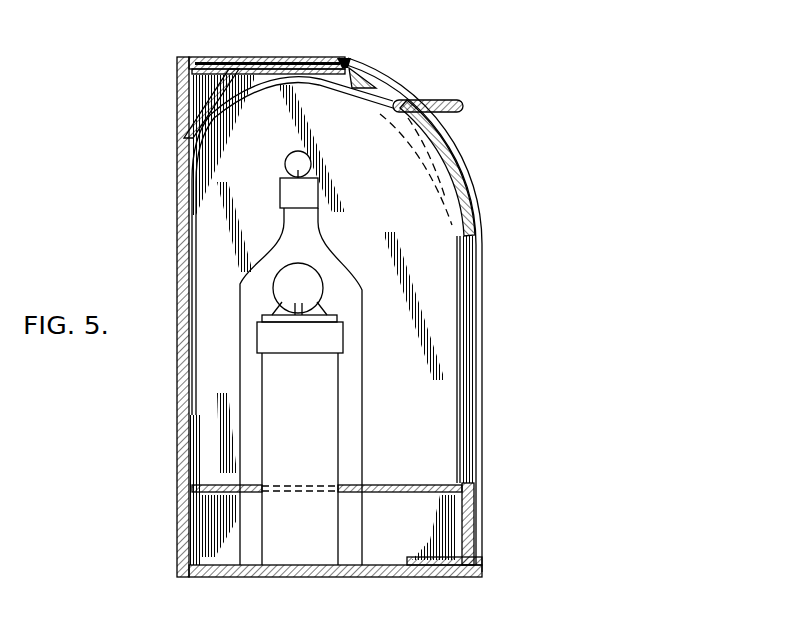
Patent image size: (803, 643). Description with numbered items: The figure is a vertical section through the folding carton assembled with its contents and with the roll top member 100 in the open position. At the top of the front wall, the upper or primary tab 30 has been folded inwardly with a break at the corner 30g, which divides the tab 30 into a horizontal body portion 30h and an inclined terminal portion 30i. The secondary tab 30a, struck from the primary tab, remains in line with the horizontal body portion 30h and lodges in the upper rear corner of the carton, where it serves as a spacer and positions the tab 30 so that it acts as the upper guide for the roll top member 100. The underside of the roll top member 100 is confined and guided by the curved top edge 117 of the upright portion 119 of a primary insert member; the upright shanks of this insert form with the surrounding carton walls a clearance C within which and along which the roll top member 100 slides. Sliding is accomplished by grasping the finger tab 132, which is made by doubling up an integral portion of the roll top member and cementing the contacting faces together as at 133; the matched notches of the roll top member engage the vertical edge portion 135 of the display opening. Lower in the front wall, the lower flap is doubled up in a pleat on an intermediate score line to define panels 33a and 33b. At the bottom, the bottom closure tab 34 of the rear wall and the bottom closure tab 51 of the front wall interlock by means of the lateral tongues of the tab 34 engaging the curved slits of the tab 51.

The upper flap or primary tab 30 is at (272, 62).
The corner 30g is at (227, 70).
The horizontal body portion 30h is at (299, 72).
The secondary tab 30a is at (214, 77).
The inclined terminal portion 30i is at (195, 119).
The roll top member 100 is at (207, 150).
The cemented faces 133 is at (412, 112).
The finger tab 132 is at (462, 104).
The curved top edge 117 is at (427, 157).
The vertical edge portion 135 is at (465, 193).
The upright portion 119 is at (430, 262).
The clearance C is at (462, 333).
The panel 33b is at (465, 485).
The panel 33a is at (474, 513).
The bottom closure flap or tab 34 is at (288, 580).
The bottom closure flap or tab 51 is at (413, 570).